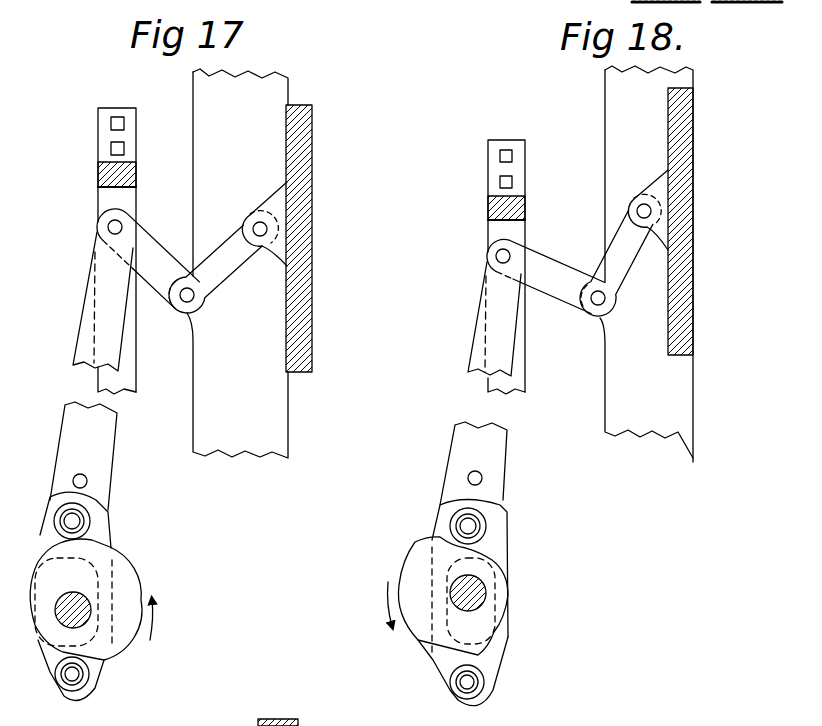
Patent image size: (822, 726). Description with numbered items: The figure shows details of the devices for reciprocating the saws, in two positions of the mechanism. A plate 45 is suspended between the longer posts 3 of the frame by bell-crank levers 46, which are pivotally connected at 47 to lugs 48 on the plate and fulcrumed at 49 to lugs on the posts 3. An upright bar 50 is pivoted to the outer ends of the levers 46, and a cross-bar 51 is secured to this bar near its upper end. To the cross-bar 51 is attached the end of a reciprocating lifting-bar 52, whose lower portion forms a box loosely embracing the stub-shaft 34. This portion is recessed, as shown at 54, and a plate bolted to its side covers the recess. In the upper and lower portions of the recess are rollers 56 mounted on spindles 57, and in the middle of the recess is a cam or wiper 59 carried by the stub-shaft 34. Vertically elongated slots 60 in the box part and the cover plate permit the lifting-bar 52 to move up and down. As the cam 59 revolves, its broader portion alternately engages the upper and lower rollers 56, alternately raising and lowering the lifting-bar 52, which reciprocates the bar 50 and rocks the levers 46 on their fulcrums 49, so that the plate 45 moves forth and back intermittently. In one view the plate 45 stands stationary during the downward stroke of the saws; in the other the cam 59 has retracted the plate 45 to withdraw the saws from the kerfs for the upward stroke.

In FIG. 17, the longer posts 3 is at (248, 448).
In FIG. 18, the longer posts 3 is at (650, 440).
In FIG. 17, the stub-shaft 34 is at (80, 627).
In FIG. 18, the stub-shaft 34 is at (486, 592).
In FIG. 17, the plate 45 is at (312, 140).
In FIG. 18, the plate 45 is at (693, 333).
In FIG. 17, the bell-crank levers 46 is at (238, 272).
In FIG. 18, the bell-crank levers 46 is at (628, 284).
In FIG. 17, the pivot connection 47 is at (262, 229).
In FIG. 18, the pivot connection 47 is at (646, 210).
In FIG. 17, the lugs 48 is at (272, 206).
In FIG. 18, the lugs 48 is at (695, 250).
In FIG. 17, the fulcrum 49 is at (186, 302).
In FIG. 18, the fulcrum 49 is at (595, 305).
In FIG. 17, the upright bar 50 is at (93, 383).
In FIG. 18, the upright bar 50 is at (512, 397).
In FIG. 17, the cross-bar 51 is at (98, 174).
In FIG. 18, the cross-bar 51 is at (488, 207).
In FIG. 17, the lifting-bar 52 is at (76, 340).
In FIG. 18, the lifting-bar 52 is at (452, 440).
In FIG. 17, the recess 54 is at (111, 531).
In FIG. 18, the recess 54 is at (447, 508).
In FIG. 18, the rollers 56 is at (490, 530).
In FIG. 18, the spindles 57 is at (465, 684).
In FIG. 17, the cam or wiper 59 is at (136, 651).
In FIG. 18, the cam or wiper 59 is at (411, 636).
In FIG. 17, the vertically elongated slots 60 is at (97, 577).
In FIG. 18, the vertically elongated slots 60 is at (447, 573).